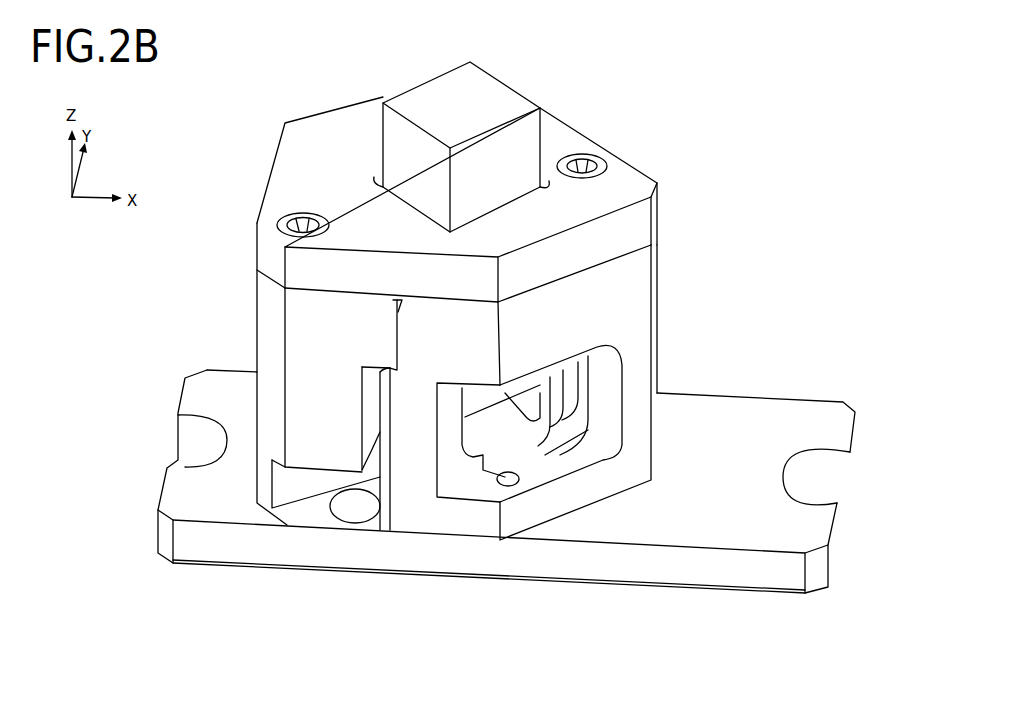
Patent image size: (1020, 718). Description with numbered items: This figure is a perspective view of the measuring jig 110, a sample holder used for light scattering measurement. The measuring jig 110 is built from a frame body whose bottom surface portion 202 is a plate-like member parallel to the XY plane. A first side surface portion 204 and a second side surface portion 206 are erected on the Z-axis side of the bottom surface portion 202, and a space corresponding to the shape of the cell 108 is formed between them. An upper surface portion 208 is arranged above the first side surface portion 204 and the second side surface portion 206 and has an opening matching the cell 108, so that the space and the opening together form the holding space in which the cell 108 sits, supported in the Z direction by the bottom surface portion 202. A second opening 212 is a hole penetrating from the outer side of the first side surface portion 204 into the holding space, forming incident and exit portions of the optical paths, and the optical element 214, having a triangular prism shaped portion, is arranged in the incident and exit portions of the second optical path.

The cell 108 is at (505, 78).
The measuring jig 110 is at (740, 88).
The bottom surface portion 202 is at (835, 565).
The first side surface portion 204 is at (660, 294).
The second side surface portion 206 is at (257, 315).
The upper surface portion 208 is at (655, 181).
The second opening 212 is at (514, 438).
The optical element 214 is at (553, 377).